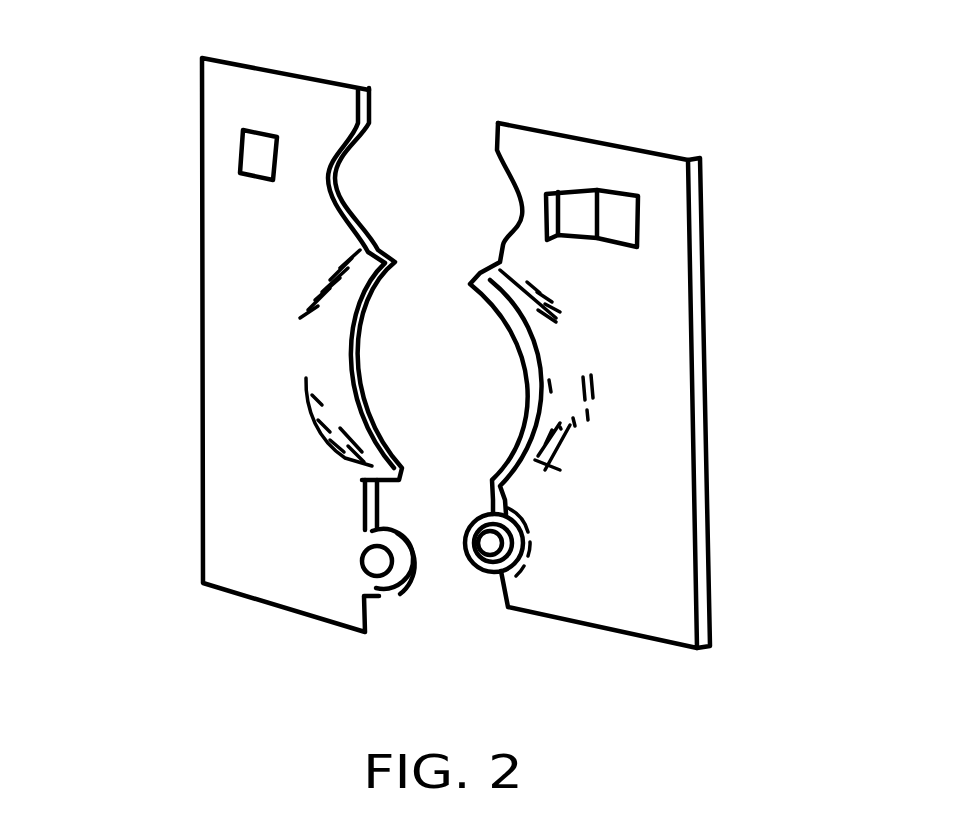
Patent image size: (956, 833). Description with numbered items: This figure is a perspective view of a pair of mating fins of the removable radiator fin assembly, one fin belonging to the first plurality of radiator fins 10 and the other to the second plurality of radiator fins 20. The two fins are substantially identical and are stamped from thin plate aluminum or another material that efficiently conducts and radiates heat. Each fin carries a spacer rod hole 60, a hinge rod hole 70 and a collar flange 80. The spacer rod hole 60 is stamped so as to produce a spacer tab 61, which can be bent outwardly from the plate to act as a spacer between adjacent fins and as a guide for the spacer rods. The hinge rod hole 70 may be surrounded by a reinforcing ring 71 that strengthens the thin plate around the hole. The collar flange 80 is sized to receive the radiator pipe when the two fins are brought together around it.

The first plurality of radiator fins 10 is at (640, 340).
The second plurality of radiator fins 20 is at (232, 103).
The spacer rod hole 60 is at (258, 163).
The spacer tab 61 is at (598, 190).
The hinge rod hole 70 is at (377, 567).
The reinforcing ring 71 is at (530, 567).
The collar flange 80 is at (342, 322).